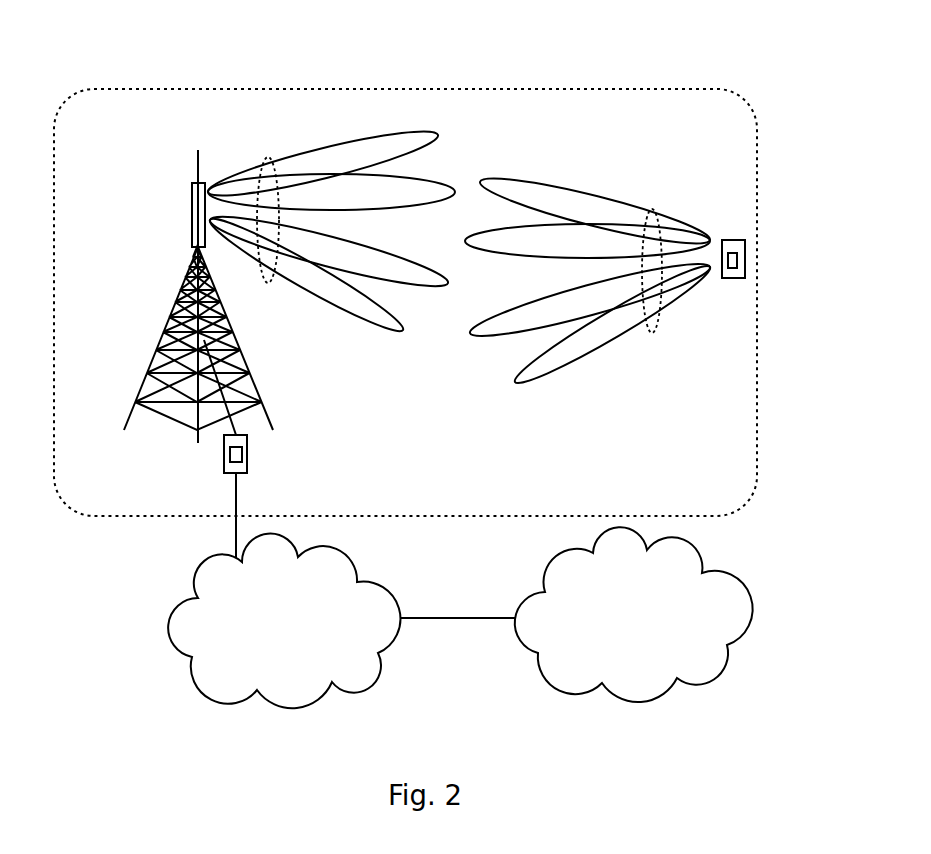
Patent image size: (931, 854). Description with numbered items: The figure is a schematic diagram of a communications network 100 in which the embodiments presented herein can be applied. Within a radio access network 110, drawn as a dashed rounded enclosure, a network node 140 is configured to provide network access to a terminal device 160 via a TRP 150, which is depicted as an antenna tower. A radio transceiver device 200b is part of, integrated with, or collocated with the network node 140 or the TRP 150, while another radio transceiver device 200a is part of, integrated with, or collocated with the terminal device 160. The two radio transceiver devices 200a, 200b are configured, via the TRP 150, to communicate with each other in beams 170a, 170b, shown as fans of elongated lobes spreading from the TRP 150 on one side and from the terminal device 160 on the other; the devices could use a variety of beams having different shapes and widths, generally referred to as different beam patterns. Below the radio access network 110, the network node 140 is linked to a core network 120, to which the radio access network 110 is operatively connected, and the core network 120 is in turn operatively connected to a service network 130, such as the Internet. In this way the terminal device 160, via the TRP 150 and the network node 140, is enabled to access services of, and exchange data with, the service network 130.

The communications network 100 is at (722, 55).
The radio access network 110 is at (125, 136).
The core network 120 is at (247, 601).
The service network 130 is at (603, 582).
The network node 140 is at (248, 459).
The TRP 150 is at (192, 214).
The terminal device 160 is at (729, 278).
The beam 170a is at (653, 212).
The beam 170b is at (268, 158).
The radio transceiver device 200a is at (727, 265).
The radio transceiver device 200b is at (230, 452).